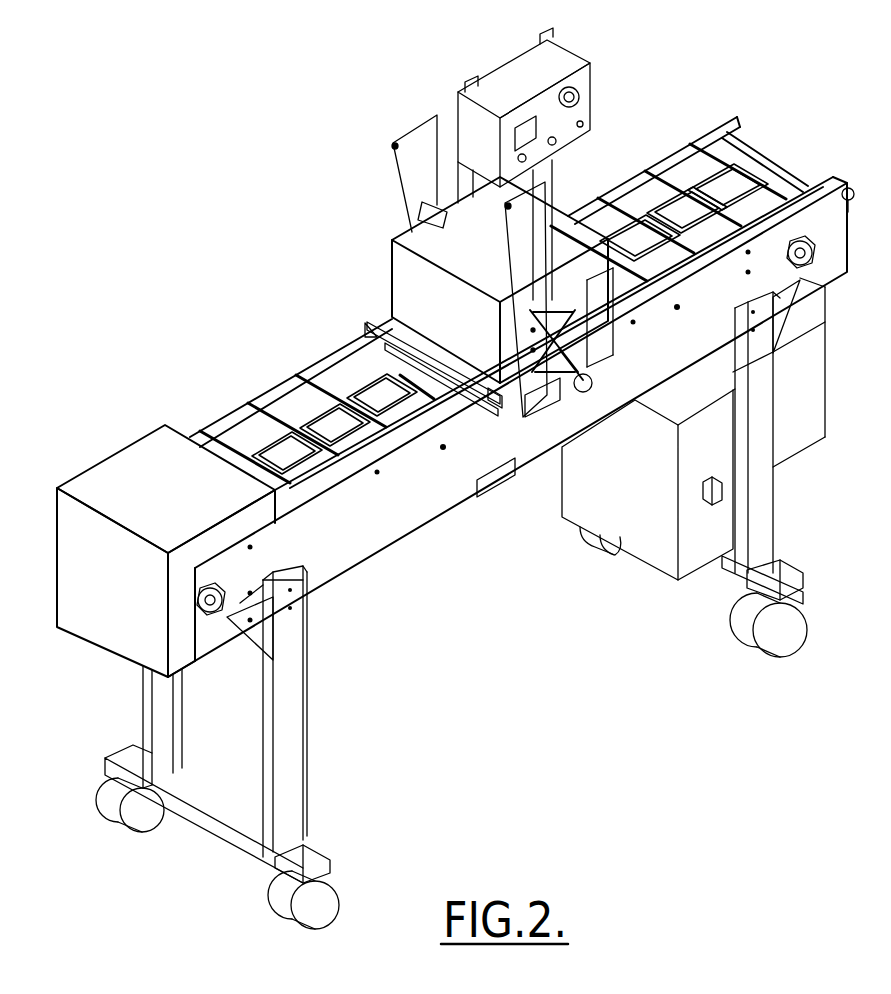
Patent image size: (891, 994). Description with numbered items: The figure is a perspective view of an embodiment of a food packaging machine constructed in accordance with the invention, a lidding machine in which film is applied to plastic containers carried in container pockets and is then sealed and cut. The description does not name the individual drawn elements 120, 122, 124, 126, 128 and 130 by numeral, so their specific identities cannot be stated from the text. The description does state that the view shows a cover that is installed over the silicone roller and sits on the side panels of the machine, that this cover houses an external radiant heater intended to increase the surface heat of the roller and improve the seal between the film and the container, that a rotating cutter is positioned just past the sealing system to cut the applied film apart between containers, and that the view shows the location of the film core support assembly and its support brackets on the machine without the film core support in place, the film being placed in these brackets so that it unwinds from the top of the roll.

The support plate 120 is at (432, 152).
The dispensing housing 122 is at (408, 288).
The dispensing bar 124 is at (387, 328).
The tray 126 is at (372, 376).
The mounting plate 128 is at (585, 275).
The adjustment mechanism 130 is at (517, 413).